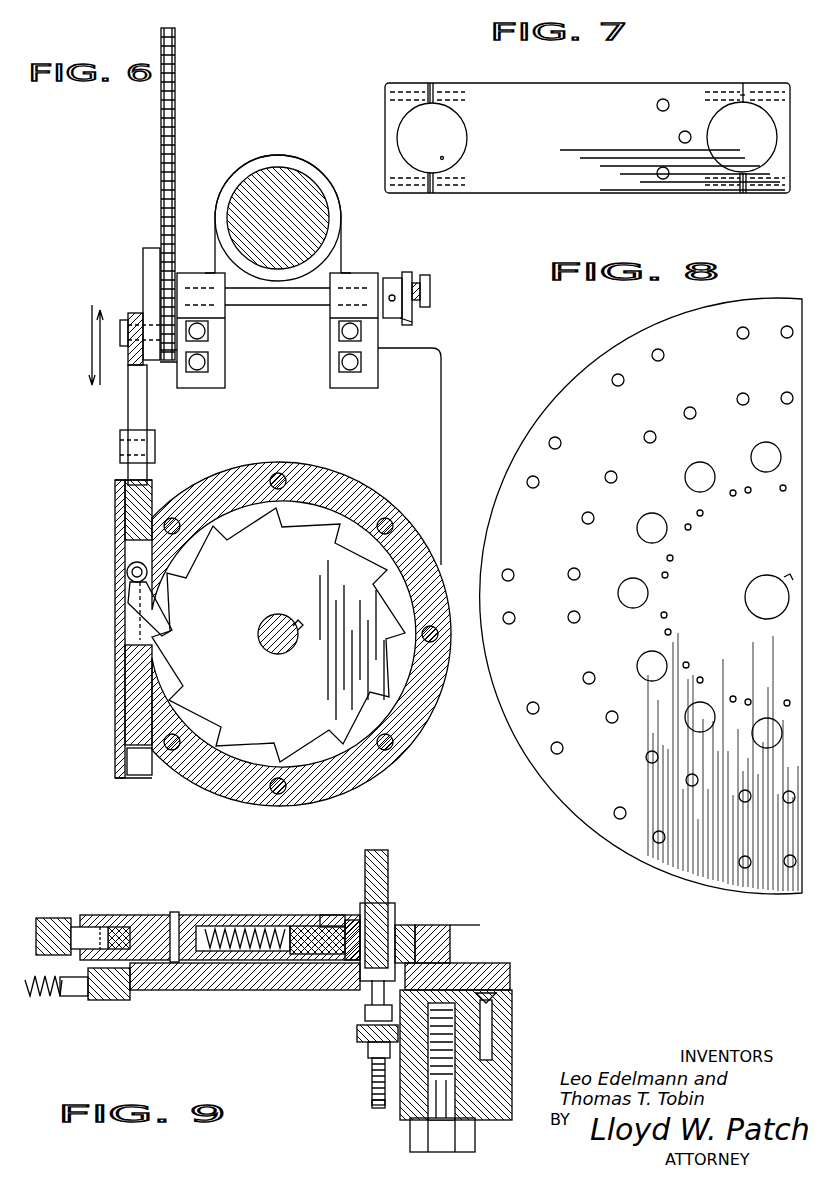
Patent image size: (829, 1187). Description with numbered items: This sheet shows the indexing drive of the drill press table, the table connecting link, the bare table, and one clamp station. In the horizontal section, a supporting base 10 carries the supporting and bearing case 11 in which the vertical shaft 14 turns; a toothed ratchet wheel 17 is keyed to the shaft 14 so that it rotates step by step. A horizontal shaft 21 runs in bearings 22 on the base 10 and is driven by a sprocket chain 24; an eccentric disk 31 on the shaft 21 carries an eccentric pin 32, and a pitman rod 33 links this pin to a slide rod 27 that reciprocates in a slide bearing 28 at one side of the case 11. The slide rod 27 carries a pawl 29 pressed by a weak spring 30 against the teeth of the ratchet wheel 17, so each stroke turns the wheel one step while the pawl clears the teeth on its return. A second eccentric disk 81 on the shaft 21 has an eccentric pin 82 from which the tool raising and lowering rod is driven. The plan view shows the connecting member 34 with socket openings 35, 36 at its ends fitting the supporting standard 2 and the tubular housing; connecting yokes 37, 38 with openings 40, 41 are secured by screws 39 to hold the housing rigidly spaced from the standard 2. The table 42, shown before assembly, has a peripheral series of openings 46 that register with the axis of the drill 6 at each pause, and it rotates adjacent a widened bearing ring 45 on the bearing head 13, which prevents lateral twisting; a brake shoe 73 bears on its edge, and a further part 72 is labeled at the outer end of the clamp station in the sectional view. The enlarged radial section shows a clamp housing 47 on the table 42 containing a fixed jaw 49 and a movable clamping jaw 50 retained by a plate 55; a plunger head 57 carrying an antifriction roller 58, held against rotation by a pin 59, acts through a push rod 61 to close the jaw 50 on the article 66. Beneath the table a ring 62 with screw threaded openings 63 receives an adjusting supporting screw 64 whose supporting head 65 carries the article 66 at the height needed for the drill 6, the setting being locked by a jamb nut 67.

In FIG. 6, the supporting standard 2 is at (282, 175).
In FIG. 9, the drill 6 is at (375, 905).
In FIG. 6, the supporting base 10 is at (440, 425).
In FIG. 6, the supporting and bearing case 11 is at (316, 798).
In FIG. 9, the bearing head 13 is at (515, 1090).
In FIG. 6, the shaft 14 is at (278, 655).
In FIG. 6, the toothed ratchet wheel 17 is at (388, 690).
In FIG. 6, the shaft 21 is at (274, 300).
In FIG. 6, the bearings 22 is at (218, 365).
In FIG. 6, the sprocket chain 24 is at (160, 143).
In FIG. 6, the slide rod 27 is at (125, 698).
In FIG. 6, the slide bearing 28 is at (137, 775).
In FIG. 6, the pawl 29 is at (166, 627).
In FIG. 6, the spring 30 is at (118, 622).
In FIG. 6, the eccentric disk 31 is at (150, 268).
In FIG. 6, the eccentric pin 32 is at (135, 313).
In FIG. 6, the pitman rod 33 is at (125, 417).
In FIG. 7, the connecting member 34 is at (568, 180).
In FIG. 7, the socket opening 35 is at (466, 142).
In FIG. 7, the socket opening 36 is at (705, 128).
In FIG. 7, the connecting yoke 37 is at (398, 140).
In FIG. 7, the connecting yoke 38 is at (748, 86).
In FIG. 7, the screws 39 is at (431, 190).
In FIG. 7, the opening 40 is at (400, 140).
In FIG. 7, the opening 41 is at (775, 195).
In FIG. 8, the table 42 is at (720, 872).
In FIG. 9, the table 42 is at (226, 978).
In FIG. 9, the bearing ring 45 is at (515, 995).
In FIG. 8, the openings 46 is at (704, 483).
In FIG. 9, the openings 46 is at (470, 968).
In FIG. 9, the clamp housing 47 is at (455, 925).
In FIG. 9, the fixed jaw 49 is at (450, 908).
In FIG. 9, the movable clamping jaw 50 is at (352, 918).
In FIG. 9, the plate 55 is at (331, 915).
In FIG. 9, the plunger head 57 is at (118, 918).
In FIG. 9, the antifriction roller 58 is at (98, 930).
In FIG. 9, the pin 59 is at (176, 912).
In FIG. 9, the push rod 61 is at (305, 915).
In FIG. 9, the ring 62 is at (357, 1034).
In FIG. 9, the screw threaded openings 63 is at (372, 1050).
In FIG. 9, the adjusting supporting screw 64 is at (374, 1104).
In FIG. 9, the supporting head 65 is at (365, 1013).
In FIG. 9, the article 66 is at (408, 920).
In FIG. 9, the jamb nut 67 is at (372, 1070).
In FIG. 9, the stop block 72 is at (66, 915).
In FIG. 9, the brake shoe 73 is at (108, 998).
In FIG. 6, the eccentric disk 81 is at (412, 320).
In FIG. 6, the eccentric pin 82 is at (412, 285).